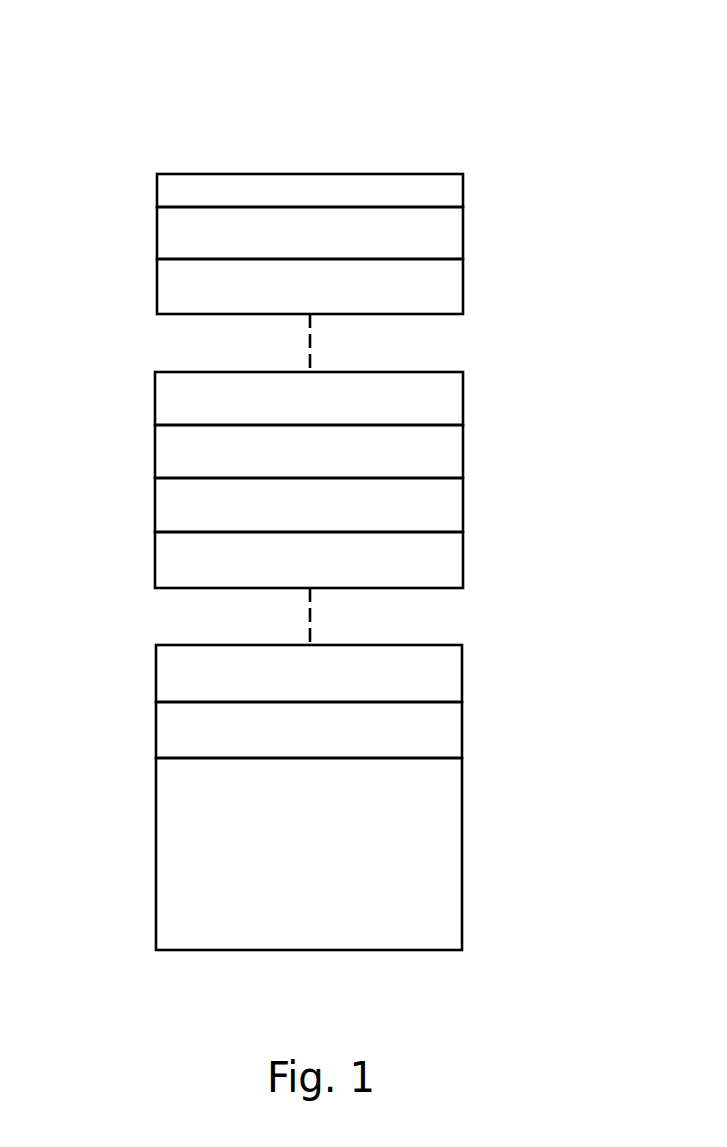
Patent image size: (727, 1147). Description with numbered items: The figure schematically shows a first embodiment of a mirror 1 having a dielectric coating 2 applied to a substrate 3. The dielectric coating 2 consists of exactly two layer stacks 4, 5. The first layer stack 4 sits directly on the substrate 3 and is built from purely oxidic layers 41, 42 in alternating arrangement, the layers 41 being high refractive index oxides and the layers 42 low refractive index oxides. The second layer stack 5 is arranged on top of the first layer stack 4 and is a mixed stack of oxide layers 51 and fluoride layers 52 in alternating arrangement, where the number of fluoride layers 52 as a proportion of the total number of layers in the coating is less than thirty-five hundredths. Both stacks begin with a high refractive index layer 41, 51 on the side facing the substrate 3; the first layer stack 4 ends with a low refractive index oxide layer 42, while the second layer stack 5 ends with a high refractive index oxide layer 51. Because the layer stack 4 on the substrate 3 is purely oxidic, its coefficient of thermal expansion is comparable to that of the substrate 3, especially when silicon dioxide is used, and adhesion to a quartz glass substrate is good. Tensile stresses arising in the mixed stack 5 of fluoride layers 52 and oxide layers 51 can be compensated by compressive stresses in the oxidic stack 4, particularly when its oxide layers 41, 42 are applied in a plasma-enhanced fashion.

The mirror 1 is at (406, 130).
The dielectric coating 2 is at (327, 453).
The substrate 3 is at (322, 868).
The first layer stack 4 is at (297, 611).
The second layer stack 5 is at (296, 313).
The high refractive index oxide layer 41 is at (155, 560).
The low refractive index oxide layer 42 is at (155, 507).
The oxide layer 51 is at (157, 192).
The fluoride layer 52 is at (157, 237).